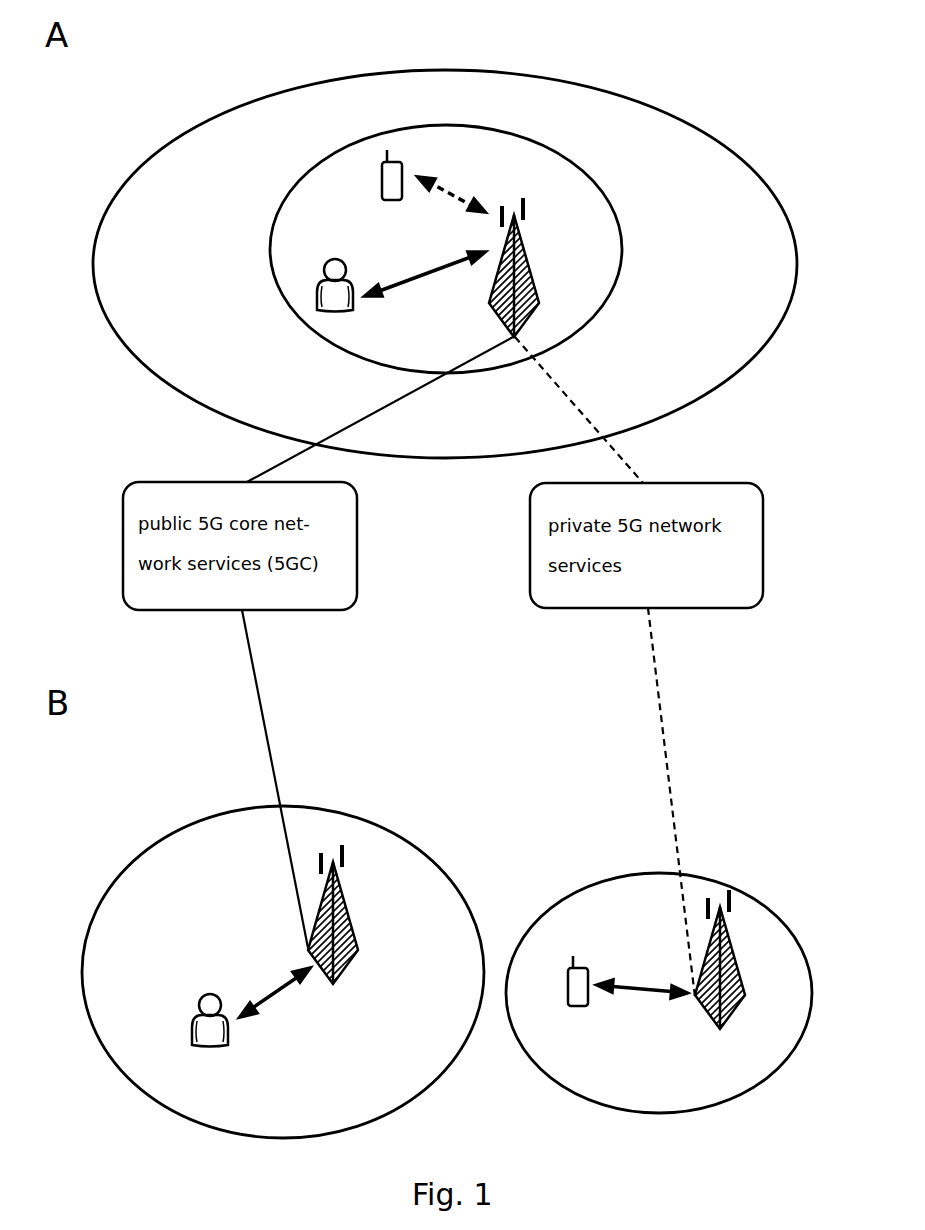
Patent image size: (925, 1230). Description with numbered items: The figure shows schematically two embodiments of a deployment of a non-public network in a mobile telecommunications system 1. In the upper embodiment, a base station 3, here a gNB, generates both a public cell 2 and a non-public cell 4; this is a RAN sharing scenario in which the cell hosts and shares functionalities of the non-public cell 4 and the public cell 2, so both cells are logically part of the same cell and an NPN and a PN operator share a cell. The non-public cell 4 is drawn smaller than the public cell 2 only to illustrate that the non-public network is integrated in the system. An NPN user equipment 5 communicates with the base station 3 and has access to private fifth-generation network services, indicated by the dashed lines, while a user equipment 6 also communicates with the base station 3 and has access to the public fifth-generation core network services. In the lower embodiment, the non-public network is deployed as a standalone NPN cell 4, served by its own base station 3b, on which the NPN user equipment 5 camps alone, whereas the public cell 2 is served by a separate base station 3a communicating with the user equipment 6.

The mobile telecommunications system 1 is at (590, 42).
The public cell 2 is at (338, 77).
The base station 3 is at (533, 253).
The public base station 3a is at (347, 902).
The private base station 3b is at (740, 970).
The non-public cell 4 is at (582, 172).
The NPN user equipment 5 is at (400, 162).
The user equipment 6 is at (350, 283).